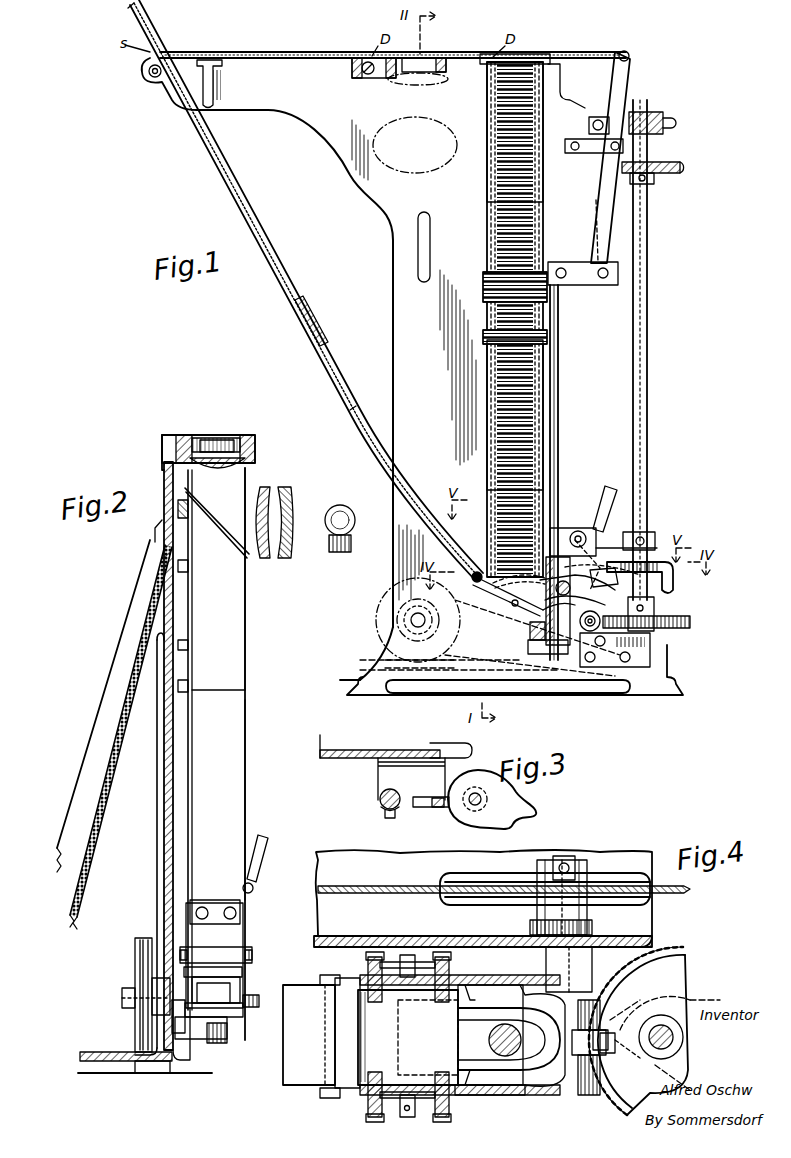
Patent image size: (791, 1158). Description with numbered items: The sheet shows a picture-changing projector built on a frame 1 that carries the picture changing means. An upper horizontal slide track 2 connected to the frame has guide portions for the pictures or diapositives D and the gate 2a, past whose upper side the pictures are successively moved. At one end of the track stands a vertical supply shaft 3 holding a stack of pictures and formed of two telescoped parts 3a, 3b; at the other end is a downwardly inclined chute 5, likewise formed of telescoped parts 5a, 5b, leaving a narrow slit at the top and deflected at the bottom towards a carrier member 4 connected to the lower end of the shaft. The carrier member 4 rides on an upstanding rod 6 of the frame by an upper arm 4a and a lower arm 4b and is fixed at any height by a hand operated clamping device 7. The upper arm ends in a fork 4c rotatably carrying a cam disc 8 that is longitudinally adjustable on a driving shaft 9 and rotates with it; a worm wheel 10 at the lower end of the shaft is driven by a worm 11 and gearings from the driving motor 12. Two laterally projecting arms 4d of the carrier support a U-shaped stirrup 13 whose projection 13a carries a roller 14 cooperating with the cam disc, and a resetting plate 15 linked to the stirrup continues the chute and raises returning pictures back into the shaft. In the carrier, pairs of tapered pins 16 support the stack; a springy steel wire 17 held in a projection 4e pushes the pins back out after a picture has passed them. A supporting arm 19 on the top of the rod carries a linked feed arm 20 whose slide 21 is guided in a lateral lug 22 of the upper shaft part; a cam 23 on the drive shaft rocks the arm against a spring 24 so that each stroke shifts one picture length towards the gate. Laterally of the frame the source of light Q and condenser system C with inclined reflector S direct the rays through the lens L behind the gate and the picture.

In FIG. 1, the frame 1 is at (376, 653).
In FIG. 3, the frame 1 is at (347, 750).
In FIG. 4, the frame 1 is at (335, 935).
In FIG. 1, the slide track 2 is at (288, 58).
In FIG. 1, the gate 2a is at (418, 58).
In FIG. 2, the gate 2a is at (222, 444).
In FIG. 1, the supply shaft 3 is at (486, 284).
In FIG. 2, the supply shaft 3 is at (246, 697).
In FIG. 1, the shaft part 3a is at (486, 186).
In FIG. 2, the shaft part 3a is at (230, 623).
In FIG. 1, the shaft part 3b is at (486, 338).
In FIG. 2, the shaft part 3b is at (230, 768).
In FIG. 1, the carrier member 4 is at (477, 572).
In FIG. 2, the carrier member 4 is at (246, 937).
In FIG. 4, the carrier member 4 is at (348, 975).
In FIG. 1, the upper arm 4a is at (578, 526).
In FIG. 1, the lower arm 4b is at (530, 636).
In FIG. 2, the lower arm 4b is at (204, 1018).
In FIG. 4, the lower arm 4b is at (480, 1085).
In FIG. 1, the fork 4c is at (650, 532).
In FIG. 1, the laterally projecting arms 4d is at (515, 610).
In FIG. 4, the laterally projecting arms 4d is at (468, 975).
In FIG. 4, the projection 4e is at (410, 955).
In FIG. 1, the chute 5 is at (324, 325).
In FIG. 1, the chute part 5a is at (236, 196).
In FIG. 1, the chute part 5b is at (330, 374).
In FIG. 4, the chute part 5b is at (302, 1082).
In FIG. 1, the upstanding rod 6 is at (559, 332).
In FIG. 2, the upstanding rod 6 is at (218, 1044).
In FIG. 3, the upstanding rod 6 is at (379, 798).
In FIG. 4, the upstanding rod 6 is at (489, 1042).
In FIG. 1, the clamping device 7 is at (393, 262).
In FIG. 2, the clamping device 7 is at (164, 750).
In FIG. 1, the cam disc 8 is at (674, 585).
In FIG. 4, the cam disc 8 is at (612, 1080).
In FIG. 1, the driving shaft 9 is at (648, 378).
In FIG. 3, the driving shaft 9 is at (477, 792).
In FIG. 4, the driving shaft 9 is at (661, 1025).
In FIG. 1, the worm wheel 10 is at (690, 622).
In FIG. 2, the worm wheel 10 is at (254, 1006).
In FIG. 4, the worm wheel 10 is at (590, 1096).
In FIG. 1, the worm 11 is at (603, 668).
In FIG. 4, the worm 11 is at (580, 1080).
In FIG. 1, the driving motor 12 is at (378, 607).
In FIG. 1, the U-shaped stirrup 13 is at (545, 600).
In FIG. 2, the U-shaped stirrup 13 is at (230, 1003).
In FIG. 4, the U-shaped stirrup 13 is at (543, 1075).
In FIG. 1, the projection 13a is at (570, 590).
In FIG. 4, the projection 13a is at (606, 1090).
In FIG. 1, the roller 14 is at (612, 586).
In FIG. 4, the roller 14 is at (604, 1028).
In FIG. 1, the resetting plate 15 is at (500, 590).
In FIG. 2, the resetting plate 15 is at (242, 972).
In FIG. 4, the resetting plate 15 is at (366, 1040).
In FIG. 2, the pins 16 is at (208, 948).
In FIG. 4, the pins 16 is at (374, 1000).
In FIG. 4, the springy steel wire 17 is at (390, 960).
In FIG. 1, the supporting arm 19 is at (580, 262).
In FIG. 3, the supporting arm 19 is at (377, 773).
In FIG. 1, the feed arm 20 is at (598, 192).
In FIG. 3, the feed arm 20 is at (436, 808).
In FIG. 1, the slide 21 is at (618, 54).
In FIG. 1, the lateral lug 22 is at (556, 80).
In FIG. 1, the cam 23 is at (660, 162).
In FIG. 3, the cam 23 is at (538, 799).
In FIG. 1, the spring 24 is at (655, 118).
In FIG. 1, the pictures D is at (165, 52).
In FIG. 2, the pictures D is at (206, 438).
In FIG. 1, the lens L is at (400, 84).
In FIG. 2, the lens L is at (215, 470).
In FIG. 1, the inclined reflector S is at (445, 120).
In FIG. 2, the inclined reflector S is at (230, 532).
In FIG. 2, the condenser system C is at (284, 492).
In FIG. 2, the source of light Q is at (335, 504).